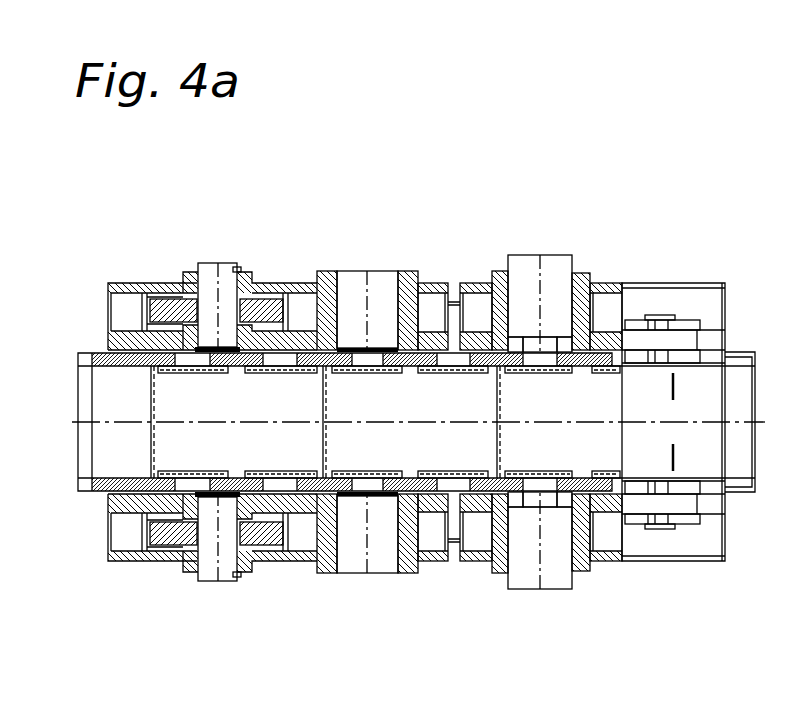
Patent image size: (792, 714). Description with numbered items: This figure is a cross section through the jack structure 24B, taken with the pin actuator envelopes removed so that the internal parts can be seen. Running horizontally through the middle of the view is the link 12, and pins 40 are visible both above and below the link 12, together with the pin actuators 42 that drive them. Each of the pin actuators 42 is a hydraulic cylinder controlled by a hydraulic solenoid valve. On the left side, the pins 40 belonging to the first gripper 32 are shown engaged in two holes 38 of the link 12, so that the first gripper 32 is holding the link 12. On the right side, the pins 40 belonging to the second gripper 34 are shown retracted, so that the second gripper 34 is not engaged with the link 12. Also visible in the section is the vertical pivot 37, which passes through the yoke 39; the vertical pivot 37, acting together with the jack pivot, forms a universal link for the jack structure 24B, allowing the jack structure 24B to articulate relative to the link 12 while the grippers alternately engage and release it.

The link 12 is at (97, 352).
The jack structure 24B is at (134, 221).
The first gripper 32 is at (197, 256).
The second gripper 34 is at (517, 246).
The vertical pivot 37 is at (223, 268).
The holes 38 is at (538, 358).
The yoke 39 is at (163, 302).
The pins 40 is at (562, 358).
The pin actuators 42 is at (560, 270).